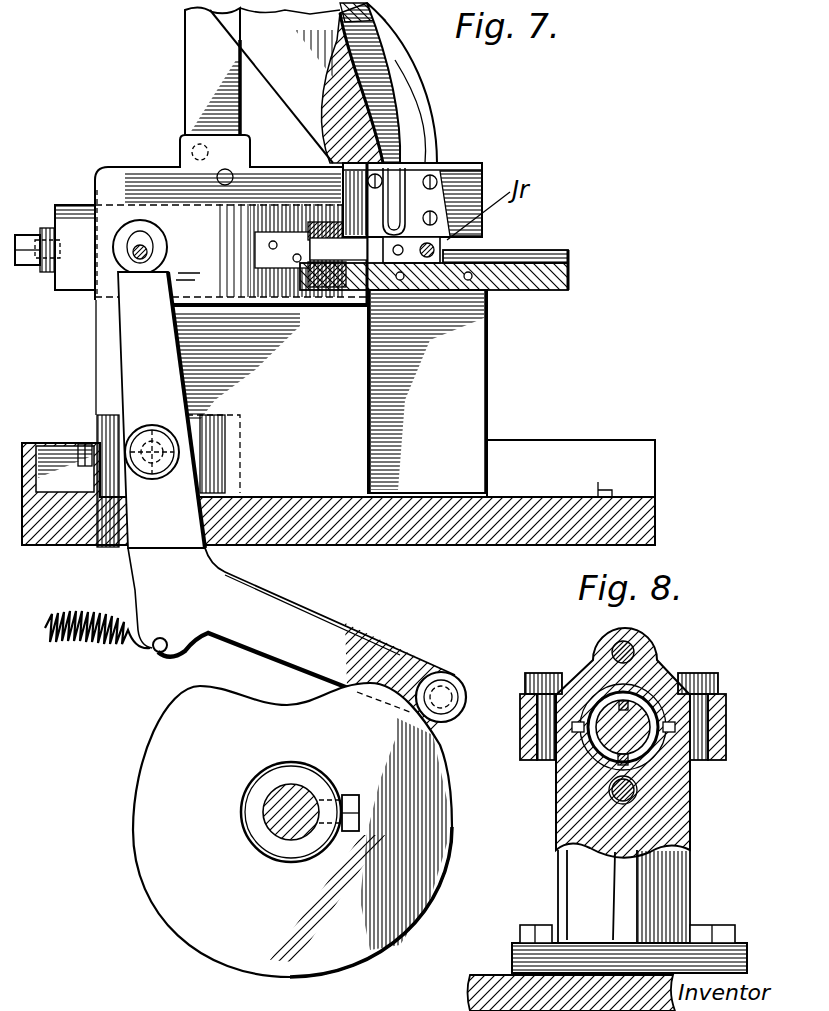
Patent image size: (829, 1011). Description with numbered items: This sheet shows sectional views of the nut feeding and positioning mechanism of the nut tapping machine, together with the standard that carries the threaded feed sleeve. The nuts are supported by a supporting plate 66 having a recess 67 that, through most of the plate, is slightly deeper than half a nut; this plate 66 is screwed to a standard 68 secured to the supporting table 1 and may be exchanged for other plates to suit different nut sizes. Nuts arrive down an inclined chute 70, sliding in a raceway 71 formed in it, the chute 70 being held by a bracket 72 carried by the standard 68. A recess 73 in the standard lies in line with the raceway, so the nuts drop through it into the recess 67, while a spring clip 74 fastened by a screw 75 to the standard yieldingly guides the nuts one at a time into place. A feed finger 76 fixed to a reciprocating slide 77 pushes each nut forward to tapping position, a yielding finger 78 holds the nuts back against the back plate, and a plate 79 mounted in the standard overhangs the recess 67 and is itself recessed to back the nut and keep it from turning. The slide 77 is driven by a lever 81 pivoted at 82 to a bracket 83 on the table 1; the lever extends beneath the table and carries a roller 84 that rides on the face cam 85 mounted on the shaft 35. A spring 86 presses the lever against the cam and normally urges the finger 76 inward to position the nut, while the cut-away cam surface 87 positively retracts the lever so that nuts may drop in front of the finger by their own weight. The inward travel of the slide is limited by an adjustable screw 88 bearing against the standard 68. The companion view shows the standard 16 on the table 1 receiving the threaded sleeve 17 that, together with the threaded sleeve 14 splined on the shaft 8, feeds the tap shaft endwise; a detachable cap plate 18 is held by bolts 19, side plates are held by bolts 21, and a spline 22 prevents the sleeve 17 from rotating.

In FIG. 7, the supporting table 1 is at (537, 480).
In FIG. 8, the supporting table 1 is at (483, 977).
In FIG. 8, the shaft 8 is at (612, 764).
In FIG. 8, the threaded sleeve 14 is at (650, 765).
In FIG. 8, the standard 16 is at (672, 830).
In FIG. 8, the threaded sleeve 17 is at (648, 656).
In FIG. 8, the cap plate 18 is at (650, 675).
In FIG. 8, the bolts 19 is at (530, 684).
In FIG. 8, the bolts 21 is at (613, 648).
In FIG. 8, the spline 22 is at (620, 783).
In FIG. 7, the shaft 35 is at (285, 796).
In FIG. 7, the supporting plate 66 is at (548, 286).
In FIG. 7, the recess 67 is at (510, 252).
In FIG. 7, the standard 68 is at (488, 364).
In FIG. 7, the inclined chute 70 is at (388, 104).
In FIG. 7, the raceway 71 is at (395, 116).
In FIG. 7, the bracket 72 is at (192, 95).
In FIG. 7, the recess 73 is at (393, 203).
In FIG. 7, the spring clip 74 is at (413, 193).
In FIG. 7, the screw 75 is at (372, 173).
In FIG. 7, the feed finger 76 is at (345, 268).
In FIG. 7, the slide 77 is at (231, 275).
In FIG. 7, the yielding finger 78 is at (443, 213).
In FIG. 7, the plate 79 is at (462, 195).
In FIG. 7, the lever 81 is at (137, 362).
In FIG. 7, the pivot 82 is at (167, 445).
In FIG. 7, the bracket 83 is at (213, 457).
In FIG. 7, the roller 84 is at (453, 675).
In FIG. 7, the face cam 85 is at (252, 955).
In FIG. 7, the spring 86 is at (105, 657).
In FIG. 7, the cut-away cam surface 87 is at (270, 698).
In FIG. 7, the adjustable screw 88 is at (23, 240).